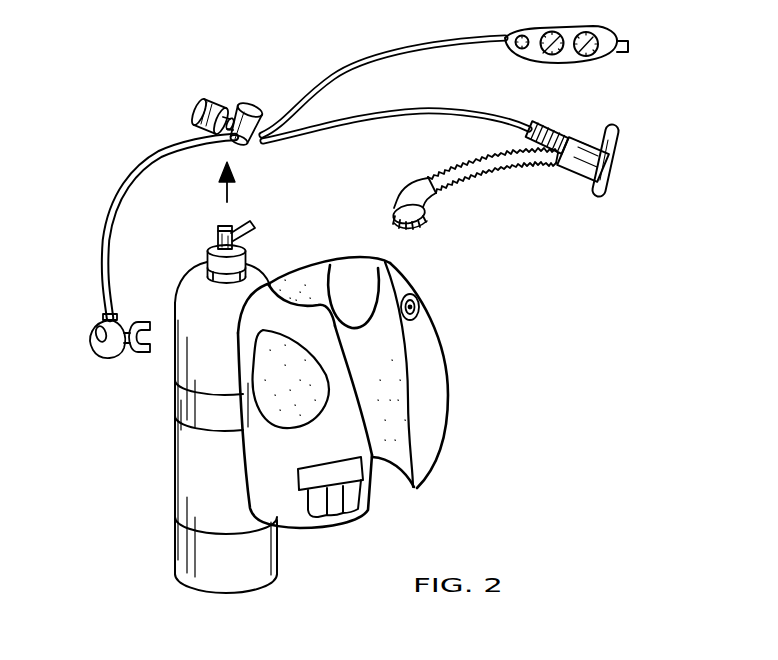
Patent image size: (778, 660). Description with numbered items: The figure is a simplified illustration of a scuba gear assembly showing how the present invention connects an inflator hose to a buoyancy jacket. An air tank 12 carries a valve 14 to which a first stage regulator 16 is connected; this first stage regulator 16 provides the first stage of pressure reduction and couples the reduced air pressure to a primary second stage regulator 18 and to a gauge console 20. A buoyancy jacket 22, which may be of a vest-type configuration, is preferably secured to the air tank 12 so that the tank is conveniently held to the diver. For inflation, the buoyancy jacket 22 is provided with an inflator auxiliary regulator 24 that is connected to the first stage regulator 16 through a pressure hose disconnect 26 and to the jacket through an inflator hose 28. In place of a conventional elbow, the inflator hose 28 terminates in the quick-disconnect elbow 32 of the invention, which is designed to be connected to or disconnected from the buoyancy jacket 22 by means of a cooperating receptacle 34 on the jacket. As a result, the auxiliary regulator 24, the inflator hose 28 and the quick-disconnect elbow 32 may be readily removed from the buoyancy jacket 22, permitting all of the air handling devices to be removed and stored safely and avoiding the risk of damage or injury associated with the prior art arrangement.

The air tank 12 is at (192, 478).
The valve 14 is at (253, 228).
The first stage regulator 16 is at (193, 126).
The primary second stage regulator 18 is at (96, 328).
The gauge console 20 is at (518, 28).
The buoyancy jacket 22 is at (432, 430).
The inflator auxiliary regulator 24 is at (613, 166).
The pressure hose disconnect 26 is at (543, 123).
The inflator hose 28 is at (450, 166).
The quick-disconnect elbow 32 is at (388, 217).
The cooperating receptacle 34 is at (420, 309).